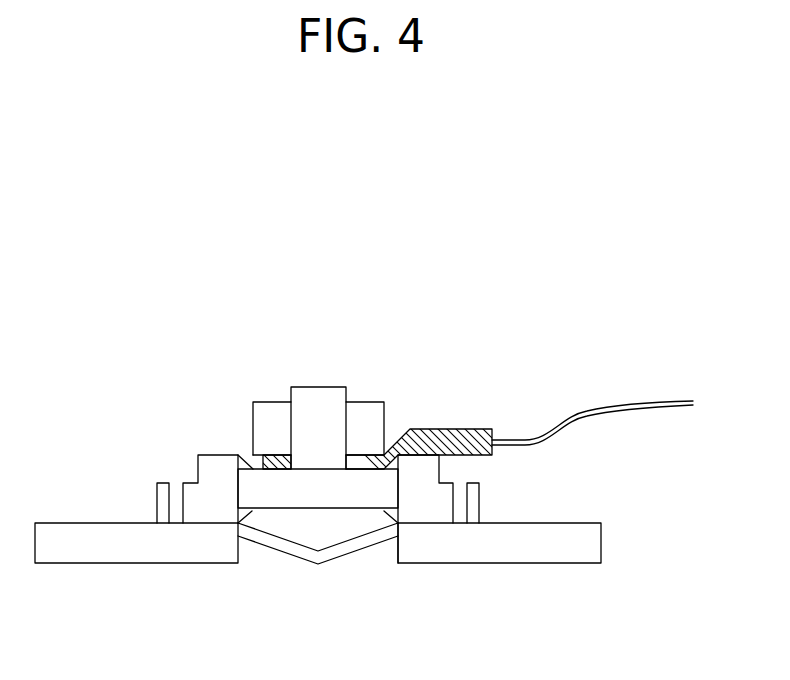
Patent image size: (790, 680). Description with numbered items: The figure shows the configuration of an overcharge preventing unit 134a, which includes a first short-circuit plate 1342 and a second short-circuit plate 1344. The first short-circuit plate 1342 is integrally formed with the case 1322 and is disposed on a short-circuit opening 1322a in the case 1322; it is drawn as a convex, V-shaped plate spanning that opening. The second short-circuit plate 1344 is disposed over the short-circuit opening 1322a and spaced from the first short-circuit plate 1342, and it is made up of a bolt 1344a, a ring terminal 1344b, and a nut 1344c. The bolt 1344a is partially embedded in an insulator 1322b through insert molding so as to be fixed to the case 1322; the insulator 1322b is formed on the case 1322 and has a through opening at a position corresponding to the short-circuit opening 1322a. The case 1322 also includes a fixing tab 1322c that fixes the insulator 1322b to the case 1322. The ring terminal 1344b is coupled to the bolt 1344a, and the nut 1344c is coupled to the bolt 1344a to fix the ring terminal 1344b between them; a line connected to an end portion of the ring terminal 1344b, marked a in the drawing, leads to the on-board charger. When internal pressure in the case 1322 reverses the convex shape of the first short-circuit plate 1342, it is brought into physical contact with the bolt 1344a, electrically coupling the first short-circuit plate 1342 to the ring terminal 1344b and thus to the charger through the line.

The overcharge preventing unit 134a is at (374, 381).
The second short-circuit plate 1344 is at (109, 375).
The bolt 1344a is at (252, 483).
The ring terminal 1344b is at (278, 455).
The nut 1344c is at (265, 413).
The case 1322 is at (582, 542).
The short-circuit opening 1322a is at (398, 550).
The insulator 1322b is at (435, 507).
The fixing tab 1322c is at (183, 503).
The first short-circuit plate 1342 is at (284, 569).
The terminal a is at (683, 408).